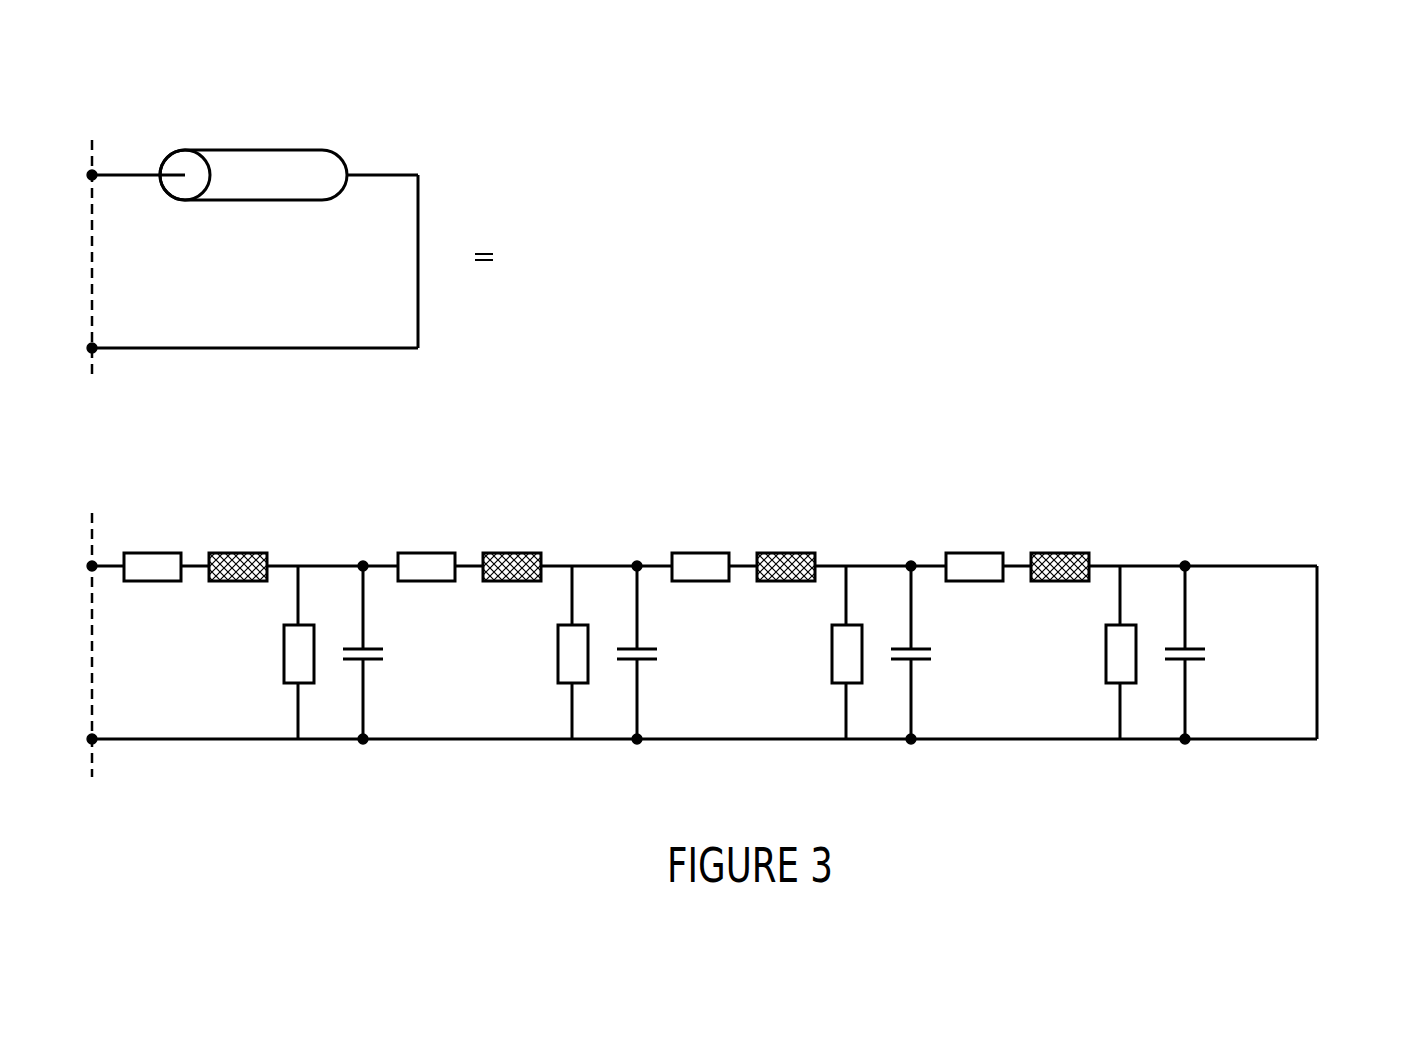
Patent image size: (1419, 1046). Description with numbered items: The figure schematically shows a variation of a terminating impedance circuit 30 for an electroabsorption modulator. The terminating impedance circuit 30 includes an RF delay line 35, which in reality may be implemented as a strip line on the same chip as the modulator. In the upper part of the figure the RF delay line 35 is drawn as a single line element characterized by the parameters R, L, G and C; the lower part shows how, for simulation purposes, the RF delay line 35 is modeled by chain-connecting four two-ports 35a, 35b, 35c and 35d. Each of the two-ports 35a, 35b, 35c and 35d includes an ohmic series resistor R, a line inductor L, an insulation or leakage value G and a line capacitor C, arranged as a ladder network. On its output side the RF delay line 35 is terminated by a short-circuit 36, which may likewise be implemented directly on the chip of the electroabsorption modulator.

The terminating impedance circuit 30 is at (290, 242).
The RF delay line 35 is at (323, 149).
The two-port 35a is at (382, 767).
The two-port 35b is at (394, 767).
The two-port 35c is at (814, 671).
The two-port 35d is at (1093, 671).
The short-circuit 36 is at (1317, 652).